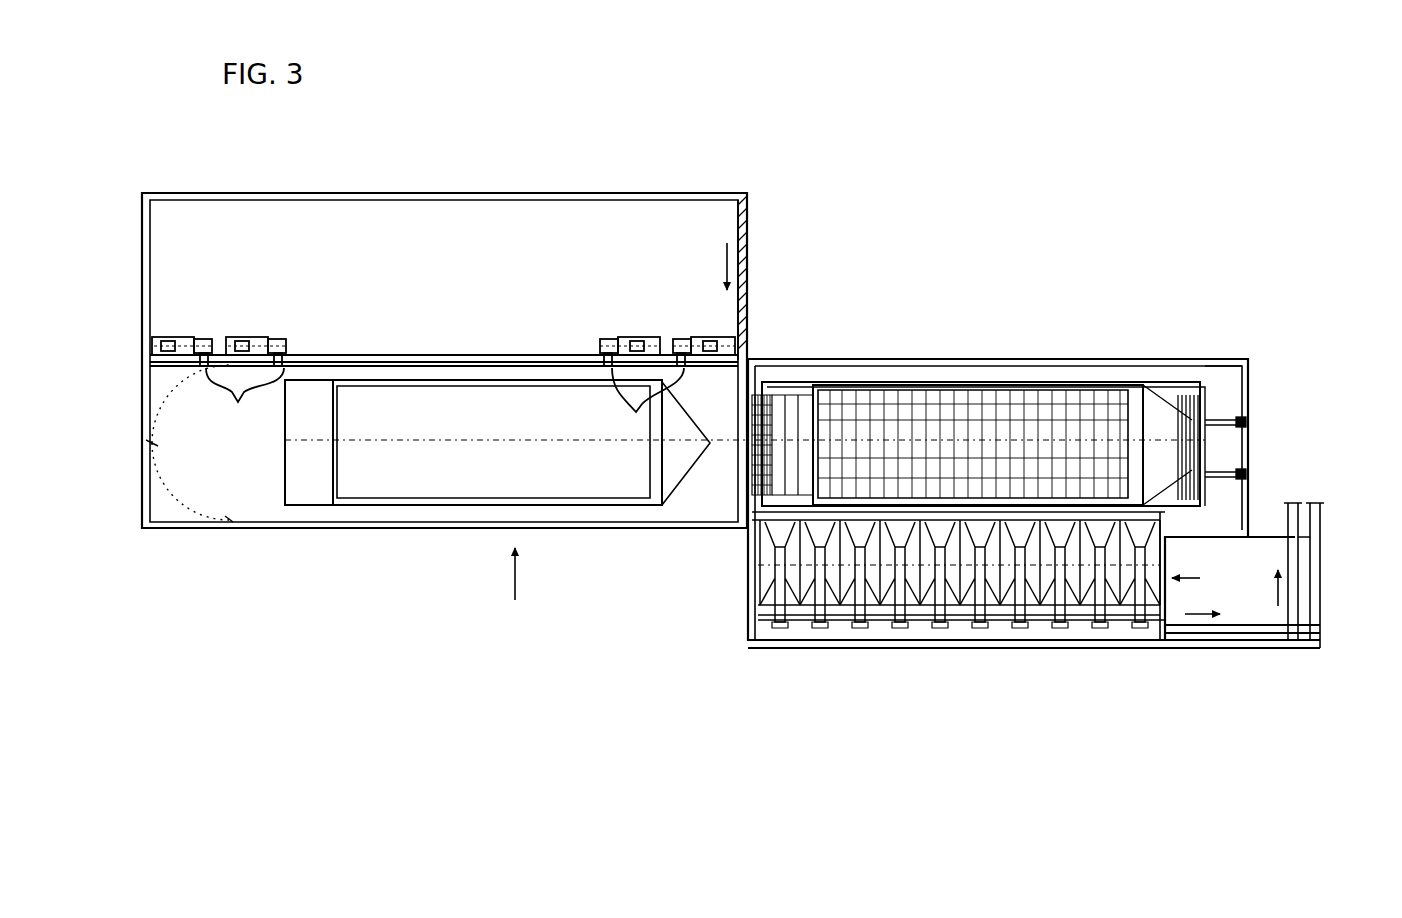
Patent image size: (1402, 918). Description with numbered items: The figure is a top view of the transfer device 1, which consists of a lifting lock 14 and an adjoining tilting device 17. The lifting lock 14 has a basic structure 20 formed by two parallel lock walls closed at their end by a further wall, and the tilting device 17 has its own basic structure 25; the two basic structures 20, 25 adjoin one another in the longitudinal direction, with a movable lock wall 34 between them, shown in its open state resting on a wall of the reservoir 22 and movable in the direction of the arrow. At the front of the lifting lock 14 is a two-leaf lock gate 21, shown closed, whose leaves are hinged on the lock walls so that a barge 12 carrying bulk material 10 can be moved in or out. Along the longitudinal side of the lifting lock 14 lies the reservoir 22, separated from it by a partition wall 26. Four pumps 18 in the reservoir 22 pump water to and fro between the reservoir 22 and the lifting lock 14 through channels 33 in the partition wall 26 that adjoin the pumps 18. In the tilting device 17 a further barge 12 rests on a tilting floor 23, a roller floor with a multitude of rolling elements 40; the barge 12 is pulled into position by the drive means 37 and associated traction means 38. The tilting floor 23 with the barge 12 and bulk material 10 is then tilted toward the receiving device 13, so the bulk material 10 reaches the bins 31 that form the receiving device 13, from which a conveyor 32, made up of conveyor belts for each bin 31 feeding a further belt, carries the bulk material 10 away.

The transfer device 1 is at (889, 240).
The bulk material 10 is at (428, 500).
The barge 12 is at (367, 507).
The receiving device 13 is at (1015, 576).
The lifting lock 14 is at (504, 600).
The tilting device 17 is at (1023, 356).
The pumps 18 is at (248, 332).
The basic structure 20 is at (258, 528).
The lock gate 21 is at (144, 428).
The reservoir 22 is at (512, 192).
The tilting floor 23 is at (846, 380).
The basic structure 25 is at (1260, 366).
The partition wall 26 is at (527, 356).
The bins 31 is at (820, 605).
The conveyor 32 is at (1305, 570).
The channels 33 is at (445, 406).
The lock wall 34 is at (748, 290).
The drive means 37 is at (1266, 468).
The traction means 38 is at (1240, 422).
The rolling elements 40 is at (1190, 368).